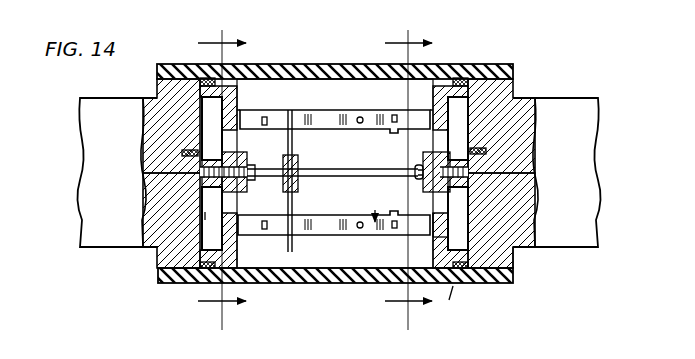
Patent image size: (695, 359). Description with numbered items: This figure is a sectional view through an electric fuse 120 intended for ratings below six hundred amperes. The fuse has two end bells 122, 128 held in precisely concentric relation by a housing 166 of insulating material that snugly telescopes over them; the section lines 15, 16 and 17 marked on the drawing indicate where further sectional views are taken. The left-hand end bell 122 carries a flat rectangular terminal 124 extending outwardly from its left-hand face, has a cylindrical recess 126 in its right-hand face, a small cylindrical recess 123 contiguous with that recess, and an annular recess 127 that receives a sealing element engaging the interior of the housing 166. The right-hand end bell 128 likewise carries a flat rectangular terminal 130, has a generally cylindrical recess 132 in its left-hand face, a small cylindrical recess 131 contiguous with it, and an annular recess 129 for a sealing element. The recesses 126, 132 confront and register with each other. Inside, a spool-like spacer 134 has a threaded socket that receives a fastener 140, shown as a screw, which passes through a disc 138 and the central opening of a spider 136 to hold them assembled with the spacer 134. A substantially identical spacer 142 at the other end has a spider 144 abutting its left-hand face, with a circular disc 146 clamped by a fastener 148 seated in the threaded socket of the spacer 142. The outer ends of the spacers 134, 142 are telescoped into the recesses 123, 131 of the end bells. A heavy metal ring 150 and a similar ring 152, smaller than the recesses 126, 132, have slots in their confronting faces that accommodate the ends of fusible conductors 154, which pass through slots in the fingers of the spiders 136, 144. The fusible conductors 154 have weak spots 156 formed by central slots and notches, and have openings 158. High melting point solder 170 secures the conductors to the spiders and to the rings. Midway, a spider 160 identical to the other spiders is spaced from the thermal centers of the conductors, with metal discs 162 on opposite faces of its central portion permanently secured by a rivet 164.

The section line 15- 15 is at (222, 176).
The section line 16- 16 is at (408, 176).
The section line 17- 17 is at (419, 213).
The fuse 120 is at (492, 45).
The end bell 122 is at (166, 258).
The small cylindrical recess 123 is at (190, 152).
The flat rectangular terminal 124 is at (92, 229).
The cylindrical recess 126 is at (193, 285).
The annular recess 127 is at (205, 78).
The end bell 128 is at (518, 271).
The annular recess 129 is at (453, 300).
The flat rectangular terminal 130 is at (590, 246).
The small cylindrical recess 131 is at (500, 120).
The generally cylindrical recess 132 is at (471, 286).
The spacer 134 is at (214, 210).
The spider 136 is at (238, 143).
The disc 138 is at (240, 157).
The fastener 140 is at (250, 178).
The spacer 142 is at (459, 173).
The spider 144 is at (422, 218).
The circular disc 146 is at (425, 160).
The fastener 148 is at (425, 179).
The heavy metal ring 150 is at (237, 243).
The ring 152 is at (440, 238).
The fusible conductors 154 is at (380, 112).
The weak spots 156 is at (312, 112).
The openings 158 is at (360, 124).
The spider 160 is at (294, 143).
The metal discs 162 is at (298, 184).
The rivet 164 is at (300, 170).
The housing 166 is at (513, 65).
The high melting point solder 170 is at (245, 113).